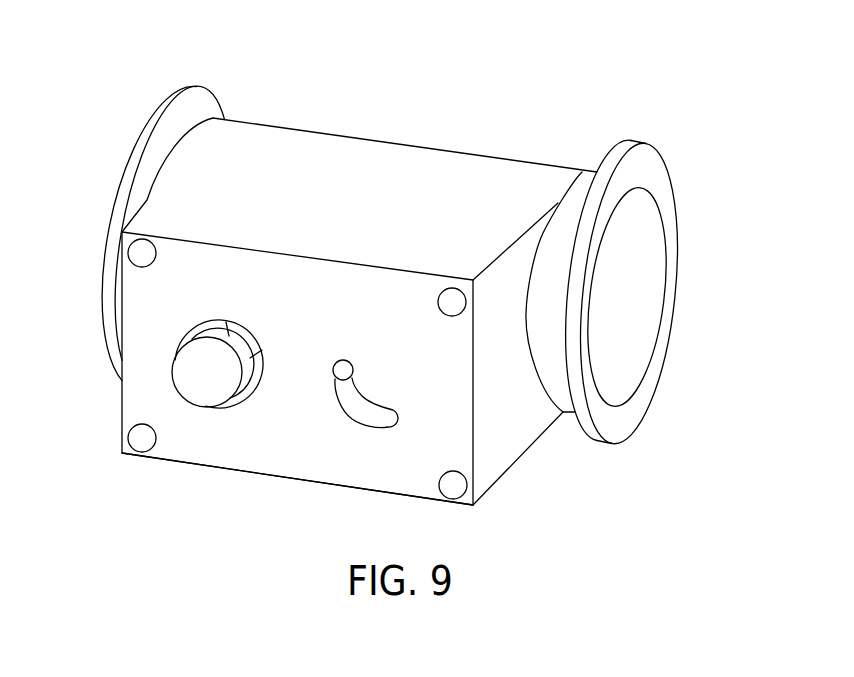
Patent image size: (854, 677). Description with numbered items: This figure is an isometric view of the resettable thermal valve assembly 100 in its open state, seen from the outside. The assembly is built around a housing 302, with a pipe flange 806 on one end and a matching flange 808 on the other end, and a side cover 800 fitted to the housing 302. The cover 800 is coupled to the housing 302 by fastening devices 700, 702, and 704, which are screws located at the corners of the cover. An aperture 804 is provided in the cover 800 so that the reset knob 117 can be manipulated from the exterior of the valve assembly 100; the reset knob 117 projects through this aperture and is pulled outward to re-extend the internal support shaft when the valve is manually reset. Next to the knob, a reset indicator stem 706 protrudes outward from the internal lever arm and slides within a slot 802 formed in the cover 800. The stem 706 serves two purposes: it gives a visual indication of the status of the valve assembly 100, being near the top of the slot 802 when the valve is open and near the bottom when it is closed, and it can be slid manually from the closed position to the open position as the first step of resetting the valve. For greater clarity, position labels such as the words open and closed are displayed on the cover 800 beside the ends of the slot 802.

The resettable thermal valve assembly 100 is at (630, 80).
The housing 302 is at (285, 132).
The cover 800 is at (336, 484).
The inlet flange 806 is at (120, 167).
The outlet flange 808 is at (653, 300).
The fastening device 700 is at (142, 452).
The fastening device 702 is at (453, 499).
The fastening device 704 is at (452, 316).
The reset indicator stem 706 is at (145, 266).
The slot 802 is at (352, 402).
The aperture 804 is at (225, 317).
The reset knob 117 is at (212, 398).